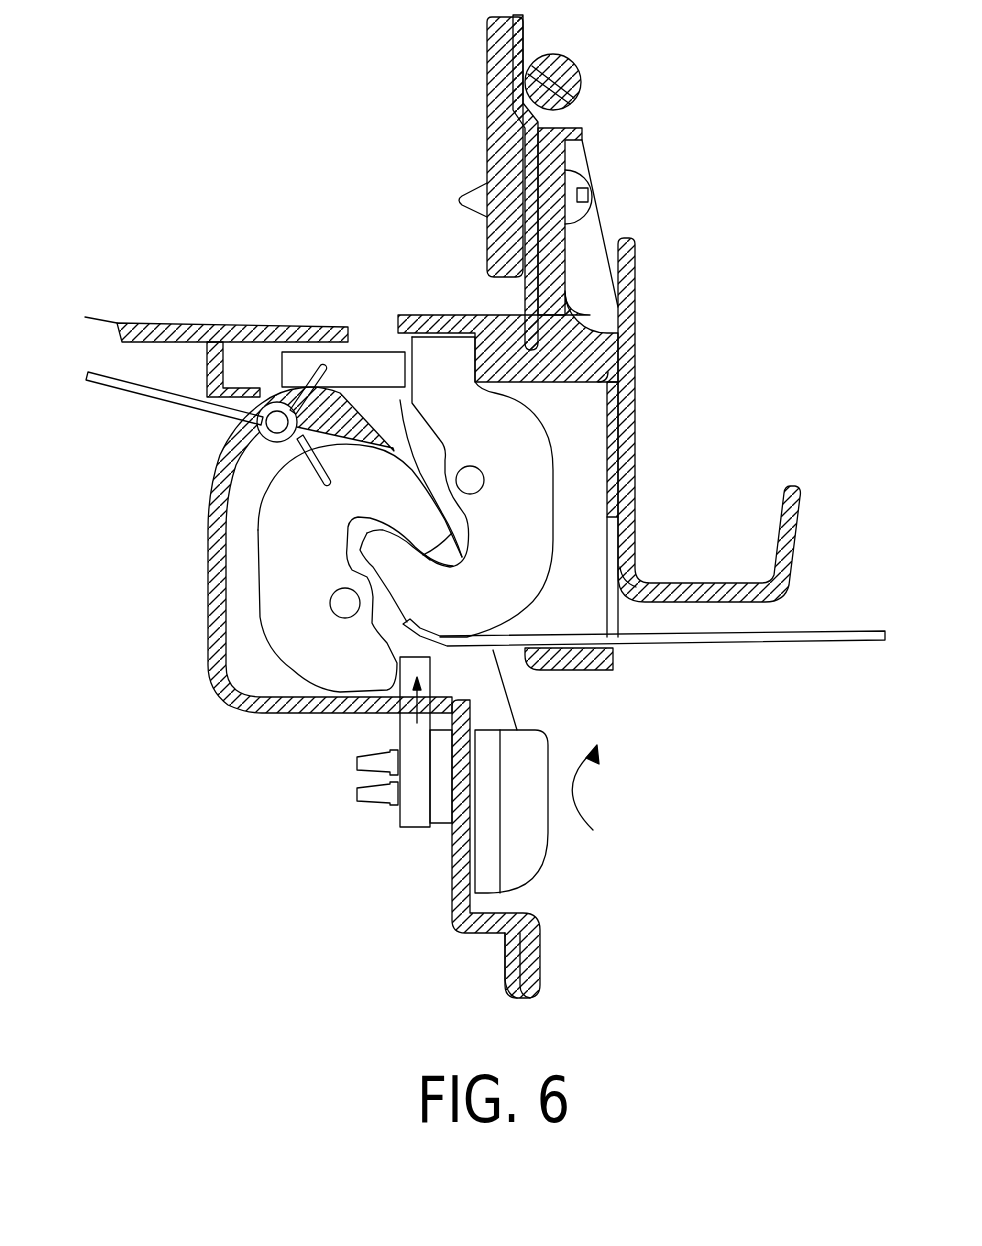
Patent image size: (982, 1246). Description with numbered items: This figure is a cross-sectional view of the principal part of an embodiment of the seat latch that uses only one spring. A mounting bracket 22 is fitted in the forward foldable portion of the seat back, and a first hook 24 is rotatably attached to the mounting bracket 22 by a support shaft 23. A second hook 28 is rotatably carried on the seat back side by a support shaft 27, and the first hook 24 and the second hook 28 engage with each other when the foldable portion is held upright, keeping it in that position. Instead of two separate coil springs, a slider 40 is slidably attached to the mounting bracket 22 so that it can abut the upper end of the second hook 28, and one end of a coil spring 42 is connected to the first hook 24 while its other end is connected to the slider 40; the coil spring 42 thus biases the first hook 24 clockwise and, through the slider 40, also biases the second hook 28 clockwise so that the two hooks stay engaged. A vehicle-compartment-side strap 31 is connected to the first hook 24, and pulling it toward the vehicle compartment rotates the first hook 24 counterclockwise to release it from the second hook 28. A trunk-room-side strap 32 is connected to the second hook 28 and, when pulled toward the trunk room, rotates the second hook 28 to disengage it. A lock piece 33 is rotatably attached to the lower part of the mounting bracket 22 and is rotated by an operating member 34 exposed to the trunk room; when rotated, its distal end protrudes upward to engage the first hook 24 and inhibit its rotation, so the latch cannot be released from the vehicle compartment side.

The mounting bracket 22 is at (142, 322).
The support shaft 23 is at (330, 603).
The first hook 24 is at (293, 500).
The support shaft 27 is at (478, 490).
The second hook 28 is at (530, 433).
The vehicle-compartment-side strap 31 is at (97, 387).
The trunk-room-side strap 32 is at (828, 643).
The lock piece 33 is at (413, 808).
The operating member 34 is at (533, 853).
The slider 40 is at (362, 363).
The coil spring 42 is at (312, 375).